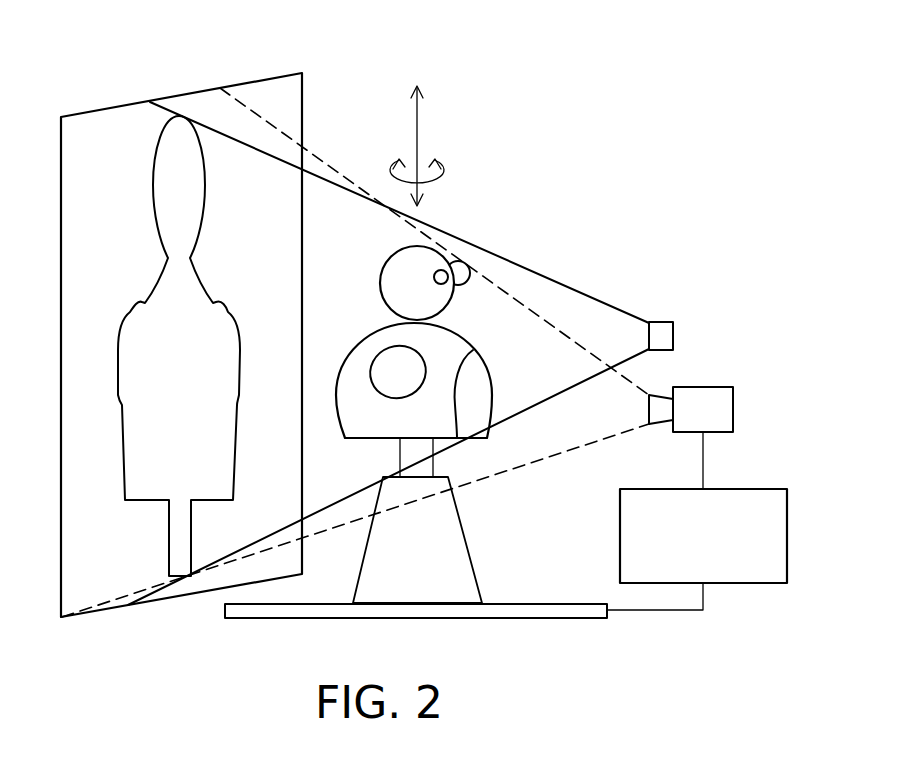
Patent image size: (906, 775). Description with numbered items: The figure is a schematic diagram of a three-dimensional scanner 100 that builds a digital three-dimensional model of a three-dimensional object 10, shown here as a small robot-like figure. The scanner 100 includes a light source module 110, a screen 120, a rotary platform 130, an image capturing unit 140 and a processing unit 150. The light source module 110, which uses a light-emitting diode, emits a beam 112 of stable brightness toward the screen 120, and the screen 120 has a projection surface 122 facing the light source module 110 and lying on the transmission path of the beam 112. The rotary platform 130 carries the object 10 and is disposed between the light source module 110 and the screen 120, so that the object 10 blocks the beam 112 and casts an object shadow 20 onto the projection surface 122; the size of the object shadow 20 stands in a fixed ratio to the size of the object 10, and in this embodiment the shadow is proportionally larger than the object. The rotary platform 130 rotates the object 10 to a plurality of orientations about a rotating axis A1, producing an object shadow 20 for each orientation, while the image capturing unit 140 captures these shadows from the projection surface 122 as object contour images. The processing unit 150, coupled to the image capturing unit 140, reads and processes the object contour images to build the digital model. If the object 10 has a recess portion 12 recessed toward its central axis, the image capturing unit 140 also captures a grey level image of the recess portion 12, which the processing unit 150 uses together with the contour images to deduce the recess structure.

The 3D object 10 is at (442, 402).
The recess portion 12 is at (476, 385).
The object shadow 20 is at (155, 152).
The 3D scanner 100 is at (771, 676).
The light source module 110 is at (674, 336).
The beam 112 is at (580, 290).
The screen 120 is at (186, 94).
The projection surface 122 is at (286, 103).
The rotary platform 130 is at (543, 619).
The image capturing unit 140 is at (734, 408).
The processing unit 150 is at (737, 488).
The rotating axis A1 is at (418, 122).